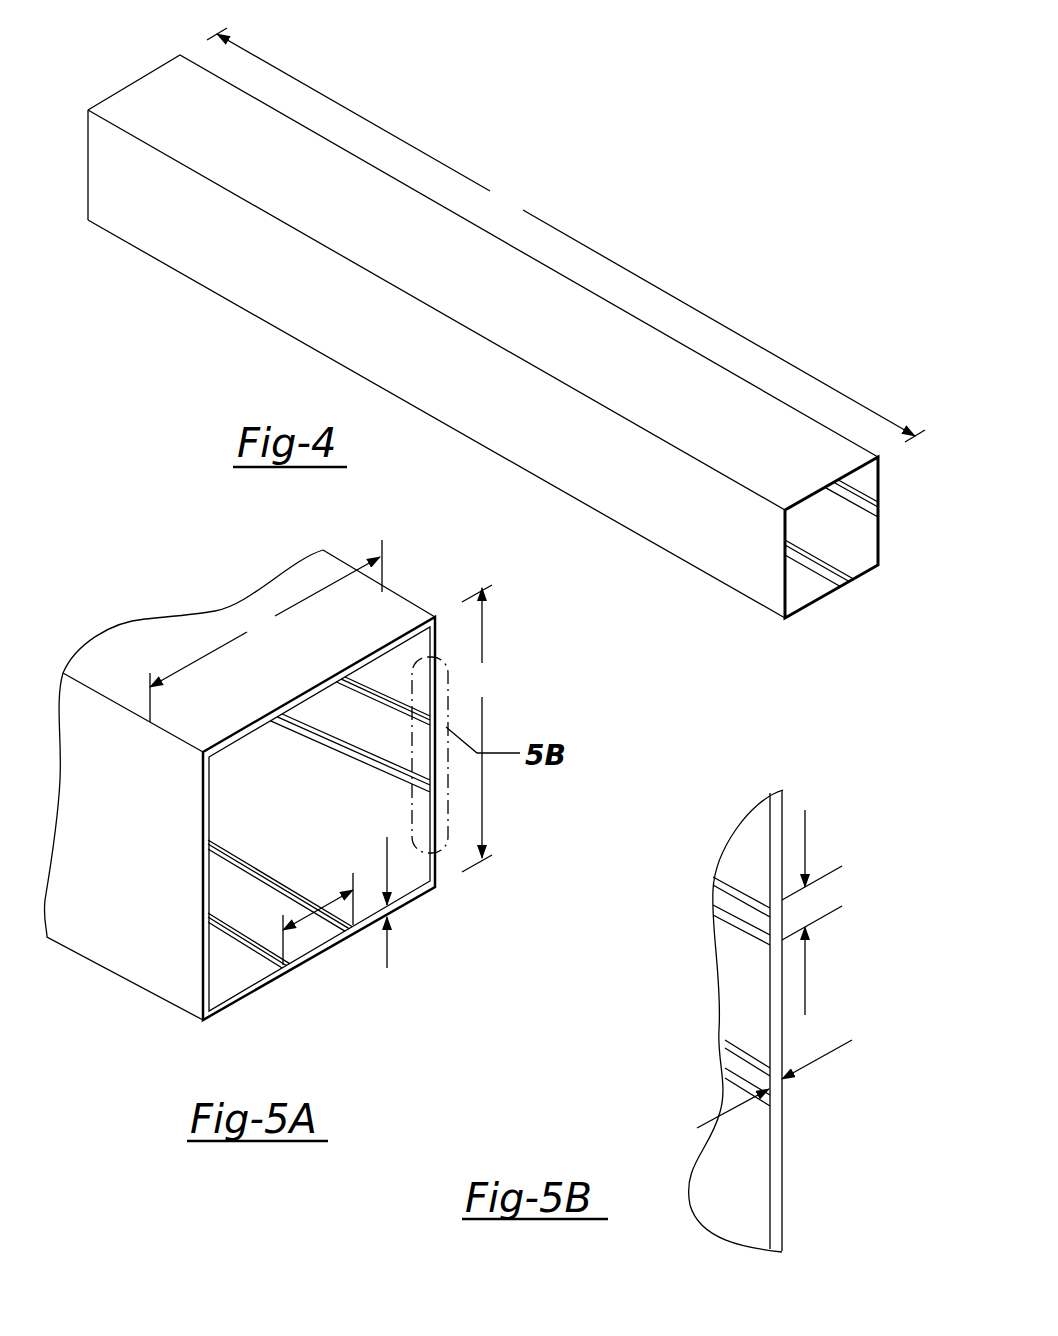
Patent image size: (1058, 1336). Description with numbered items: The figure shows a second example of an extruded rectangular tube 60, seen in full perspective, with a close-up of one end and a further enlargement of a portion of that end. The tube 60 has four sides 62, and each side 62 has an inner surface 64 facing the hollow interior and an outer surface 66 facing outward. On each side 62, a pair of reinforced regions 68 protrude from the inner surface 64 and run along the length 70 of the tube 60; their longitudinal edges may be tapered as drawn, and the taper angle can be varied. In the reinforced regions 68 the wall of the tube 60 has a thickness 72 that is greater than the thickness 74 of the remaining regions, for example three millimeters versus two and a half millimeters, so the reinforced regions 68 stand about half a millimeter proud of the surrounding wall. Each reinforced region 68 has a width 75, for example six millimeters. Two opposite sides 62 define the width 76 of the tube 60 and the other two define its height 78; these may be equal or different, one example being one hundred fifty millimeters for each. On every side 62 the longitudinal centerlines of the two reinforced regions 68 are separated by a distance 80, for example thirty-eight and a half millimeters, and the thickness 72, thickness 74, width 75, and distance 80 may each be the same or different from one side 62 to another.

In FIG. 4, the rectangular tube 60 is at (247, 315).
In FIG. 4, the side 62 is at (163, 118).
In FIG. 5A, the side 62 is at (403, 617).
In FIG. 5B, the side 62 is at (783, 1194).
In FIG. 4, the inner surface 64 is at (855, 528).
In FIG. 5A, the inner surface 64 is at (288, 764).
In FIG. 5B, the inner surface 64 is at (747, 1180).
In FIG. 4, the outer surface 66 is at (674, 401).
In FIG. 5A, the outer surface 66 is at (314, 668).
In FIG. 5B, the outer surface 66 is at (784, 1117).
In FIG. 4, the reinforced region 68 is at (836, 503).
In FIG. 5A, the reinforced region 68 is at (395, 706).
In FIG. 5B, the reinforced region 68 is at (735, 905).
In FIG. 4, the length 70 is at (566, 235).
In FIG. 5B, the thickness in the reinforced regions 72 is at (787, 1074).
In FIG. 5A, the thickness in other regions 74 is at (386, 919).
In FIG. 5B, the width of reinforced region 75 is at (812, 898).
In FIG. 5A, the width 76 is at (266, 631).
In FIG. 5A, the height 78 is at (477, 728).
In FIG. 5A, the distance 80 is at (334, 900).